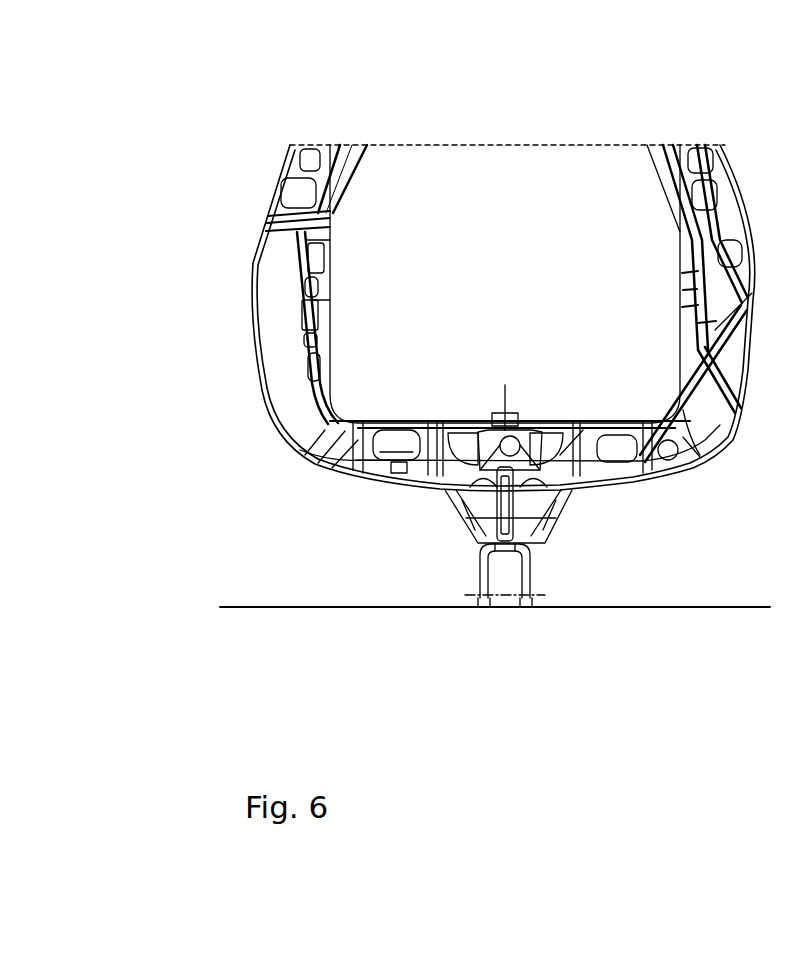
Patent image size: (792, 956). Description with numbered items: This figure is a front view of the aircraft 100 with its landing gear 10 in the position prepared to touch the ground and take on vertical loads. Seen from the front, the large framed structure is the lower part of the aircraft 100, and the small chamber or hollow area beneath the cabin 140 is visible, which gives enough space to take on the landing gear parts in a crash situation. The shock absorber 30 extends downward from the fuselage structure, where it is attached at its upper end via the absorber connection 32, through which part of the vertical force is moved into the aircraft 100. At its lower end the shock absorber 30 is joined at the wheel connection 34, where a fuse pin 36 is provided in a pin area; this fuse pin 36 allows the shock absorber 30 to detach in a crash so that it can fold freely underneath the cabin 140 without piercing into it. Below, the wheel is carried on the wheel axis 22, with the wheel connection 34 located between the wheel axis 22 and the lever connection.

The aircraft 100 is at (254, 198).
The cabin 140 is at (505, 205).
The landing gear 10 is at (297, 526).
The absorber connection 32 is at (503, 420).
The shock absorber 30 is at (550, 497).
The wheel connection 34 is at (543, 520).
The fuse pin 36 is at (537, 540).
The wheel axis 22 is at (533, 587).